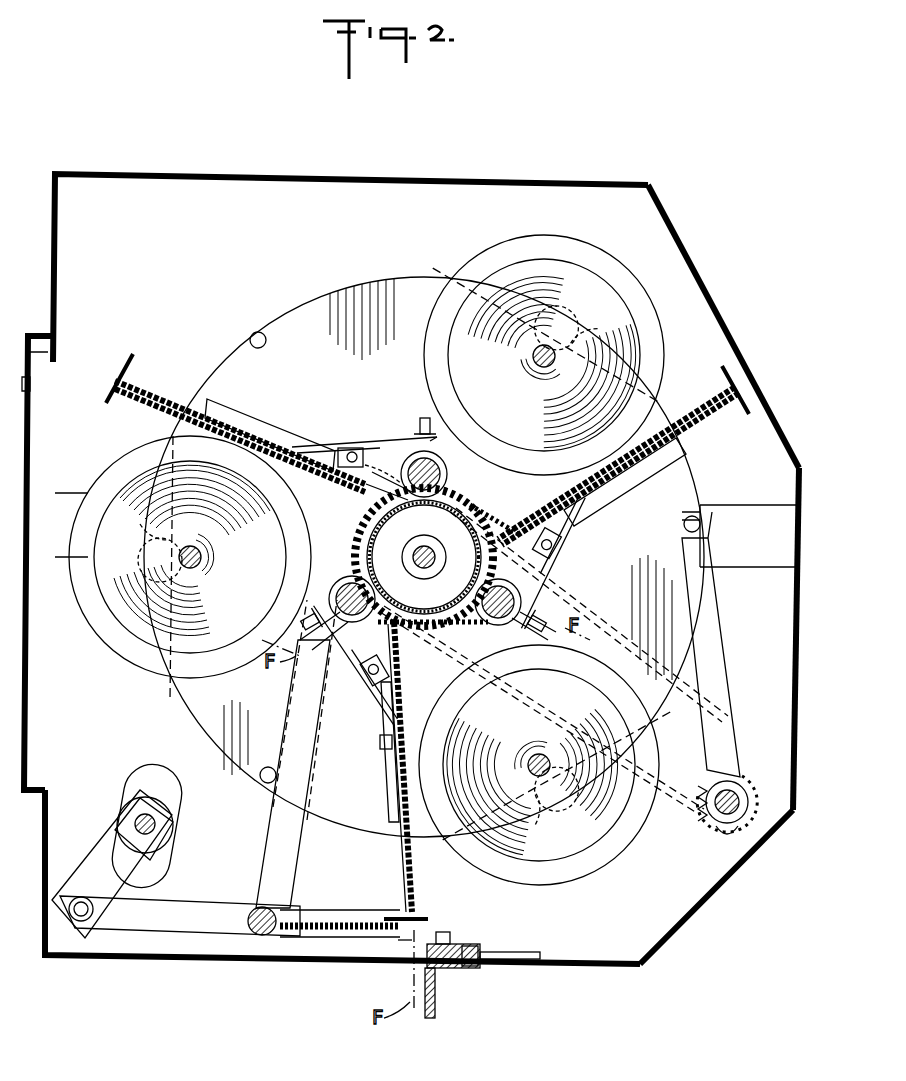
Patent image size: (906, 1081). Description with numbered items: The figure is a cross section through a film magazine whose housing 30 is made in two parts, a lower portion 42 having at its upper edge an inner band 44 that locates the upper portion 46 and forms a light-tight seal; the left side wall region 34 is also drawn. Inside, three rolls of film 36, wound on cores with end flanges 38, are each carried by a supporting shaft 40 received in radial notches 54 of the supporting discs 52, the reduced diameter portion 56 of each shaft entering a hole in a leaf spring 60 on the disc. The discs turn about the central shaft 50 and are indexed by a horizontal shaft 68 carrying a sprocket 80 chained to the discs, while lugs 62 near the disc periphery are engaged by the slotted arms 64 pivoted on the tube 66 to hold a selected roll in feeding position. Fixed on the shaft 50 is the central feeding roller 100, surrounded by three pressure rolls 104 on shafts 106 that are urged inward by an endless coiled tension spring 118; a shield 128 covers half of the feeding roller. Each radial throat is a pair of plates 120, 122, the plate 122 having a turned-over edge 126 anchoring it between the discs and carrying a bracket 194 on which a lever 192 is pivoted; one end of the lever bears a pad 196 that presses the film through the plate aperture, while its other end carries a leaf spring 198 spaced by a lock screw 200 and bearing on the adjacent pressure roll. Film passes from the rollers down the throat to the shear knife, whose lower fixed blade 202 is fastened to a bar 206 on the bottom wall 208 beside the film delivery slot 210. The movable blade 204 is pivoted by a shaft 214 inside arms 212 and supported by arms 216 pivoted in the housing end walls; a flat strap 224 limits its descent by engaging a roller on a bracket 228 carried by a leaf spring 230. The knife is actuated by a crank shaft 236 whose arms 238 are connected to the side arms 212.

The housing 30 is at (684, 248).
The side channel 34 is at (50, 446).
The film 36 is at (142, 492).
The flanges 38 is at (122, 456).
The supporting shaft 40 is at (200, 549).
The lower portion 42 is at (800, 692).
The inner band 44 is at (775, 516).
The upper portion 46 is at (764, 410).
The shaft 50 is at (430, 550).
The supporting discs 52 is at (412, 278).
The radial notches 54 is at (150, 582).
The reduced diameter portion 56 is at (540, 384).
The leaf springs 60 is at (540, 818).
The lugs 62 is at (258, 334).
The arms 64 is at (716, 634).
The tube 66 is at (718, 828).
The shaft 68 is at (732, 784).
The sprocket 80 is at (746, 802).
The central feeding roller 100 is at (392, 590).
The pressure rolls 104 is at (330, 600).
The shafts 106 is at (346, 580).
The endless coiled tension spring 118 is at (480, 502).
The metal plate 120 is at (322, 478).
The metal plate 122 is at (248, 432).
The turned-over edge 126 is at (222, 400).
The shield 128 is at (500, 522).
The lever 192 is at (314, 444).
The bracket 194 is at (348, 448).
The pad 196 is at (382, 738).
The leaf spring 198 is at (376, 444).
The lock screw 200 is at (426, 416).
The lower fixed blade 202 is at (450, 944).
The movable blade 204 is at (316, 916).
The bar 206 is at (472, 946).
The bottom wall 208 is at (280, 966).
The film delivery slot 210 is at (402, 944).
The arms 212 is at (170, 900).
The shaft 214 is at (254, 910).
The arms 216 is at (264, 838).
The flat strap 224 is at (444, 934).
The bracket 228 is at (436, 976).
The leaf spring 230 is at (514, 958).
The shaft 236 is at (152, 812).
The arms 238 is at (108, 854).